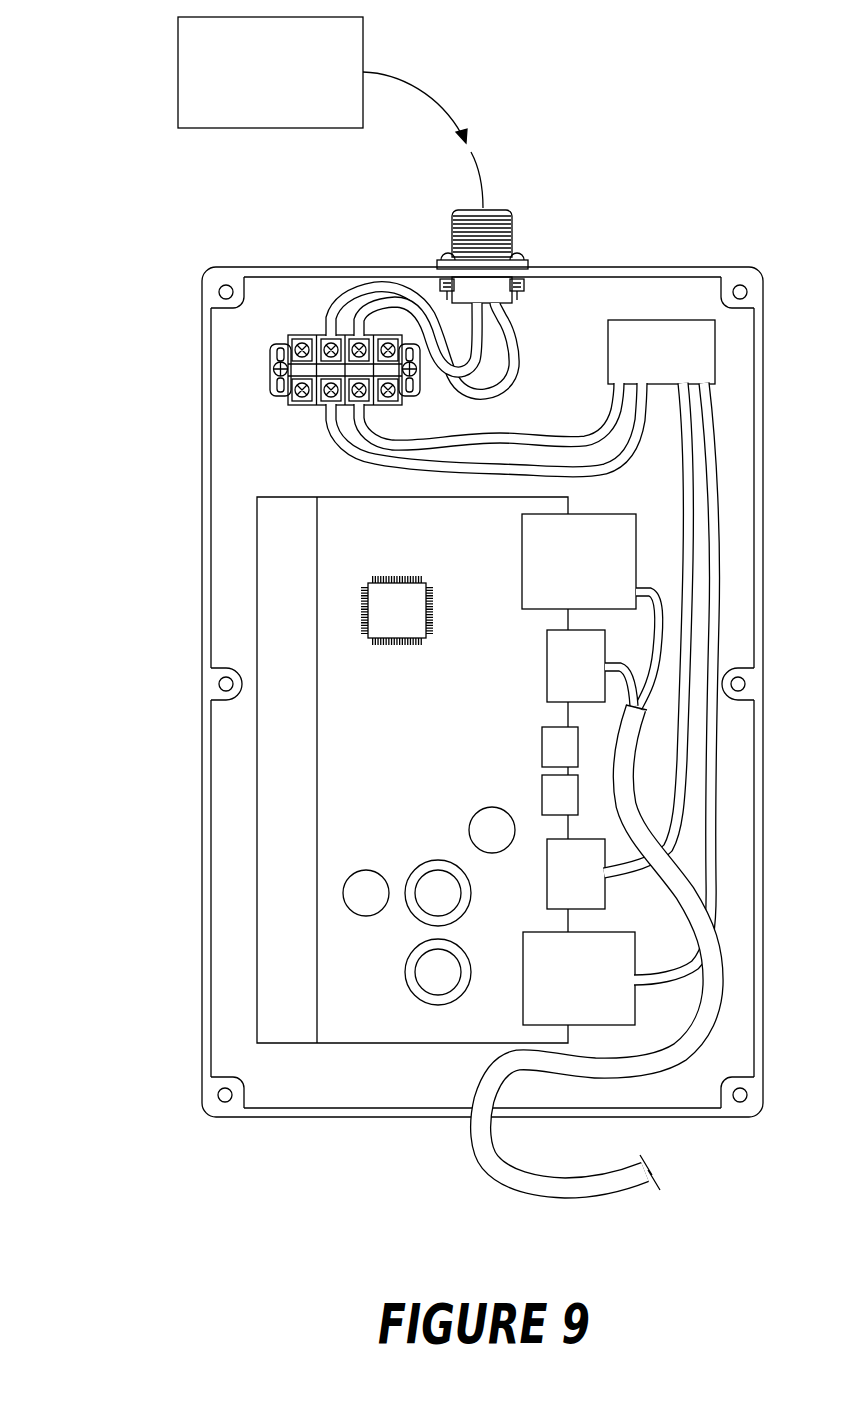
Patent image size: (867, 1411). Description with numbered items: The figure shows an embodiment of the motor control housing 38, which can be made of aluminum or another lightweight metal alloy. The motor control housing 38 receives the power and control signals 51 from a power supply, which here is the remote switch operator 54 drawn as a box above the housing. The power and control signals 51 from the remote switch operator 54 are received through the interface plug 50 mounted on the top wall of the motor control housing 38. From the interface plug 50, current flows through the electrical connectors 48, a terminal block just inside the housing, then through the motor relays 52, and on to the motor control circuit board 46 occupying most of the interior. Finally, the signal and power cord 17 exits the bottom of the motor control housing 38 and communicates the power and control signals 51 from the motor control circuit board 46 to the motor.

The signal and power cord 17 is at (488, 1088).
The motor control housing 38 is at (205, 898).
The motor control circuit board 46 is at (347, 523).
The electrical connectors 48 is at (305, 335).
The interface plug 50 is at (507, 237).
The power and control signals 51 is at (450, 111).
The motor relays 52 is at (660, 320).
The remote switch operator 54 is at (178, 70).